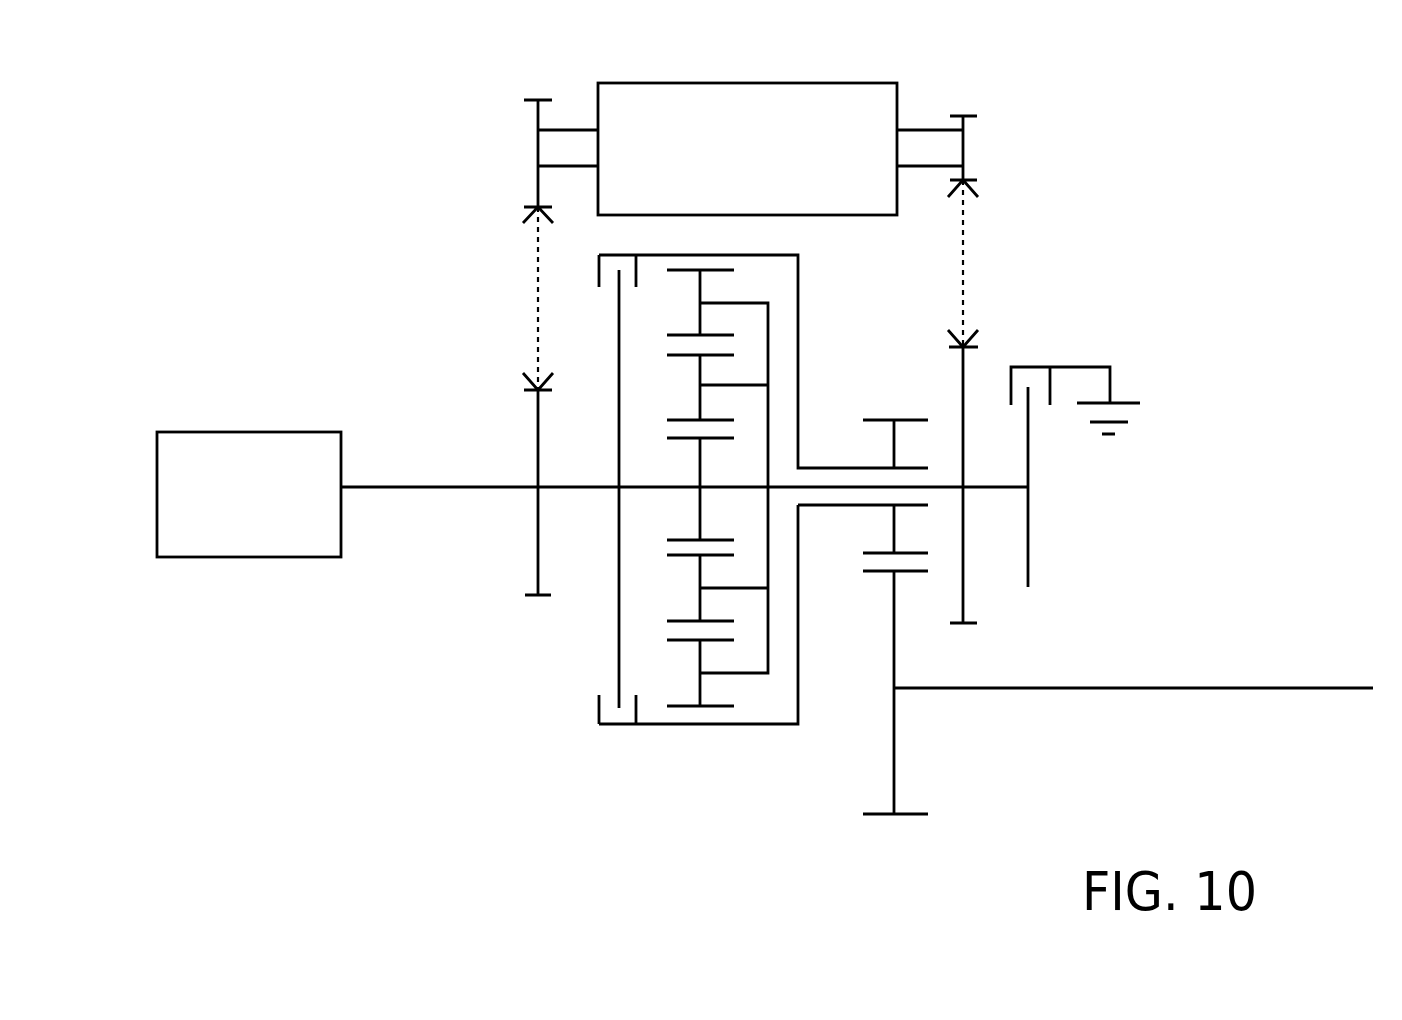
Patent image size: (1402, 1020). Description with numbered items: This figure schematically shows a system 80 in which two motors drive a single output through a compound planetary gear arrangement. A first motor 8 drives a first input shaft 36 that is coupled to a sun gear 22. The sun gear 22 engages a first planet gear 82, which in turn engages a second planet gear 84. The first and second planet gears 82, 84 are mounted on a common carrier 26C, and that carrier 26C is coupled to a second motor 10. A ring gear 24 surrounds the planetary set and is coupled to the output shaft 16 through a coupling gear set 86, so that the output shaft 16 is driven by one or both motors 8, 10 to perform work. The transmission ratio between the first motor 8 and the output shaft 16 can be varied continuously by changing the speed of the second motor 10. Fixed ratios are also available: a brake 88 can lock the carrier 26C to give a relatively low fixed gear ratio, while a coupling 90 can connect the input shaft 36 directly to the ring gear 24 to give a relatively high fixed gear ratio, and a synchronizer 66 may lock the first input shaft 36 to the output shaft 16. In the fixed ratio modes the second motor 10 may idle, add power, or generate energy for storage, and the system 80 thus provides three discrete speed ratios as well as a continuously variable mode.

The first motor 8 is at (241, 457).
The second motor 10 is at (753, 95).
The output shaft 16 is at (1173, 688).
The sun gear 22 is at (697, 458).
The ring gear 24 is at (785, 727).
The common carrier 26C is at (768, 345).
The first input shaft 36 is at (438, 480).
The synchronizer 66 is at (600, 727).
The system 80 is at (1135, 162).
The first planet gear 82 is at (697, 375).
The second planet gear 84 is at (700, 287).
The coupling gear set 86 is at (866, 563).
The brake 88 is at (1047, 367).
The coupling 90 is at (636, 727).